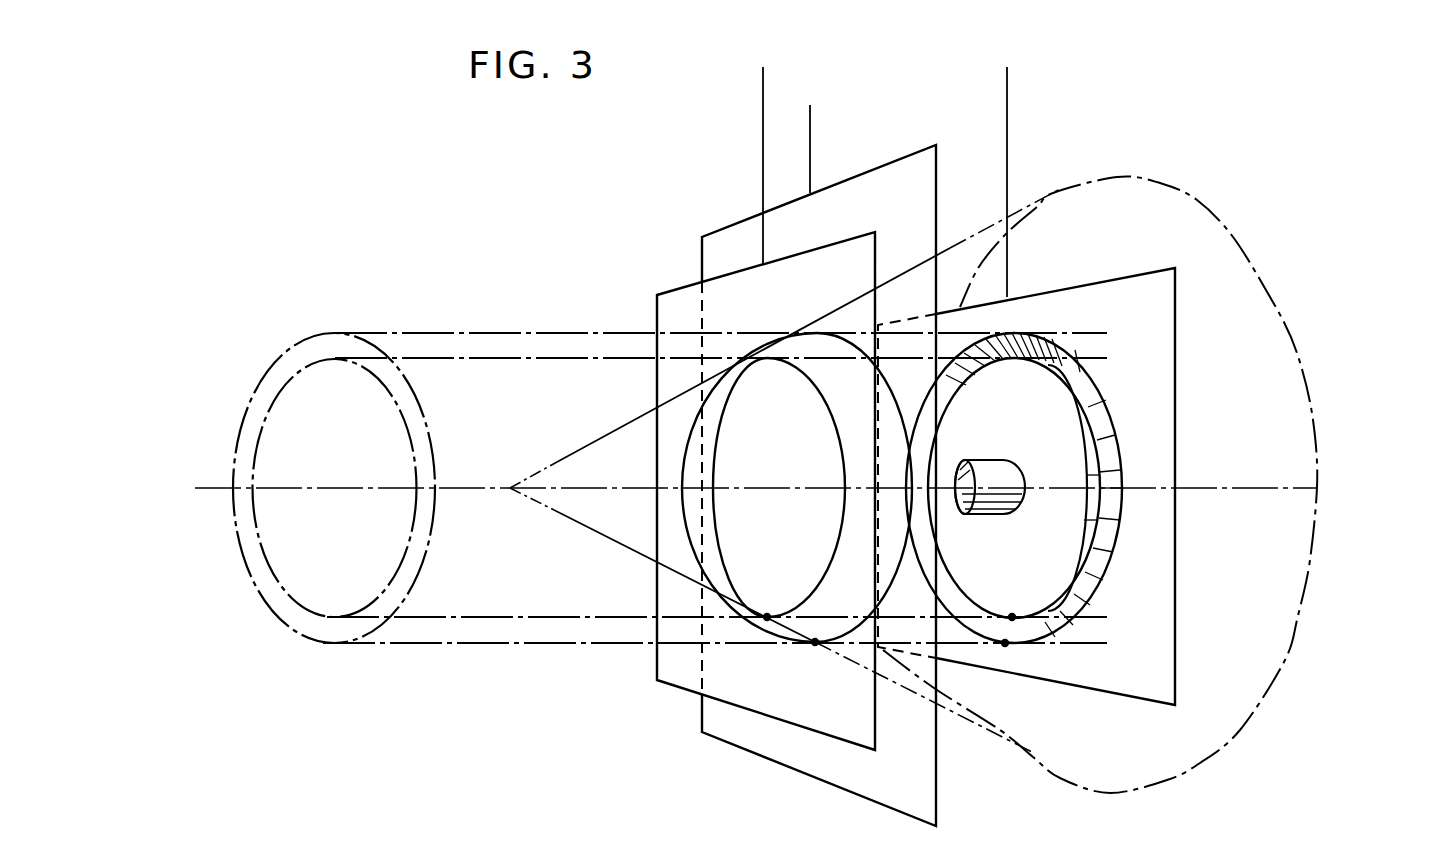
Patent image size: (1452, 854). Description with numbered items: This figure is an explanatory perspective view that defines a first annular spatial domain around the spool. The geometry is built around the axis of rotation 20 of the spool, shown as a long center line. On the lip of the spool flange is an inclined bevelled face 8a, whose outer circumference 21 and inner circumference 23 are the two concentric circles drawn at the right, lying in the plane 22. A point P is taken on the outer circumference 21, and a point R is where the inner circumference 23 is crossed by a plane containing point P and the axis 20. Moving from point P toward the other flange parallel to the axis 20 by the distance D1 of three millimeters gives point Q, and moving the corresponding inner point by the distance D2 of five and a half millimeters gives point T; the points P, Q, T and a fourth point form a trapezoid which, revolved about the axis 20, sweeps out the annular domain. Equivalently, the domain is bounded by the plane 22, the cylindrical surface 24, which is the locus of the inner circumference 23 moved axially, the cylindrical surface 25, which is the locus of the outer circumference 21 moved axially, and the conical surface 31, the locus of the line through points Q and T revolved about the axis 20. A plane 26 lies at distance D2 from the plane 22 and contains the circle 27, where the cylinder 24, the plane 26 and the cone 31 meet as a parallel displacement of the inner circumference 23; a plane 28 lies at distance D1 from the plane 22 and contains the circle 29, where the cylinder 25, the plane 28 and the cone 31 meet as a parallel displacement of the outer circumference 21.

The axis of rotation 20 is at (1318, 488).
The outer circumference 21 is at (1120, 455).
The plane 22 is at (1130, 273).
The inner circumference 23 is at (1113, 530).
The cylindrical surface 24 is at (292, 602).
The cylindrical surface 25 is at (318, 333).
The plane 26 is at (678, 288).
The circle 27 is at (690, 525).
The plane 28 is at (733, 220).
The circle 29 is at (735, 598).
The conical surface 31 is at (552, 462).
The bevelled face 8a is at (1085, 418).
The point T is at (767, 615).
The point Q is at (814, 644).
The point R is at (1012, 616).
The point P is at (1005, 645).
The distance D1 is at (1005, 117).
The distance D2 is at (1005, 79).